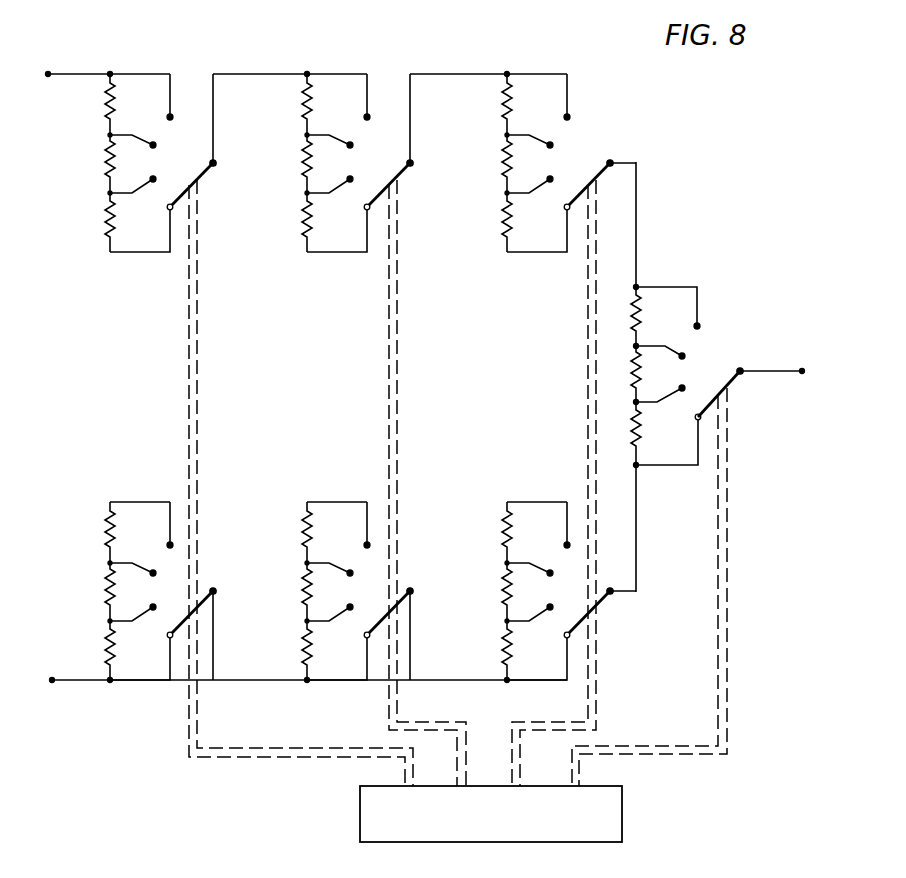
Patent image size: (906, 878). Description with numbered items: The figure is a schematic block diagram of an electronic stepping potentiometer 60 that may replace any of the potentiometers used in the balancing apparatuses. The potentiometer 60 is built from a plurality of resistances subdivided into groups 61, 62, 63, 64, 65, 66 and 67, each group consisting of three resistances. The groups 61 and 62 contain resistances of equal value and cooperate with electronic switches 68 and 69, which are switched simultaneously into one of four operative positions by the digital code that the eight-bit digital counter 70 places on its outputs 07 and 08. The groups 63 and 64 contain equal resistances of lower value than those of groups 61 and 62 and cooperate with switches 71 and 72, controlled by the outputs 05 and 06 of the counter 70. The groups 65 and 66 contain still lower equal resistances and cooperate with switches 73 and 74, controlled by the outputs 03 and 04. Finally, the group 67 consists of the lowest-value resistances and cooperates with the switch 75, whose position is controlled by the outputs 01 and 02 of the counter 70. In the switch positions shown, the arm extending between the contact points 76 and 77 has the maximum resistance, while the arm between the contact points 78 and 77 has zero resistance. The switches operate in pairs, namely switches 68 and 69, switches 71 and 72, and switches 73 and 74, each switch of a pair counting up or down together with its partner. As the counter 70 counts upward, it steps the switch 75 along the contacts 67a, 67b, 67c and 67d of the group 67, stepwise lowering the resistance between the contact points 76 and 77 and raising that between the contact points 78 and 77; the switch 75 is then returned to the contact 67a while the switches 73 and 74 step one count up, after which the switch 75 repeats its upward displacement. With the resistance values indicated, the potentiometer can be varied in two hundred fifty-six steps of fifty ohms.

The electronic potentiometer 60 is at (681, 230).
The group of resistances 61 is at (117, 142).
The group of resistances 62 is at (116, 571).
The group of resistances 63 is at (314, 142).
The group of resistances 64 is at (314, 571).
The group of resistances 65 is at (514, 142).
The group of resistances 66 is at (514, 569).
The group of resistances 67 is at (619, 355).
The contact 67a is at (702, 419).
The contact 67b is at (685, 386).
The contact 67c is at (685, 355).
The contact 67d is at (702, 325).
The electronic switch 68 is at (163, 163).
The electronic switch 69 is at (170, 591).
The 8-bit digital counter 70 is at (360, 815).
The switch 71 is at (360, 163).
The switch 72 is at (367, 591).
The switch 73 is at (571, 163).
The switch 74 is at (571, 591).
The switch 75 is at (730, 388).
The contact point 76 is at (49, 72).
The contact point 77 is at (802, 366).
The contact point 78 is at (53, 683).
The output 01 is at (727, 543).
The output 02 is at (718, 523).
The output 03 is at (596, 412).
The output 04 is at (587, 378).
The output 05 is at (398, 375).
The output 06 is at (388, 342).
The output 07 is at (198, 368).
The output 08 is at (188, 352).